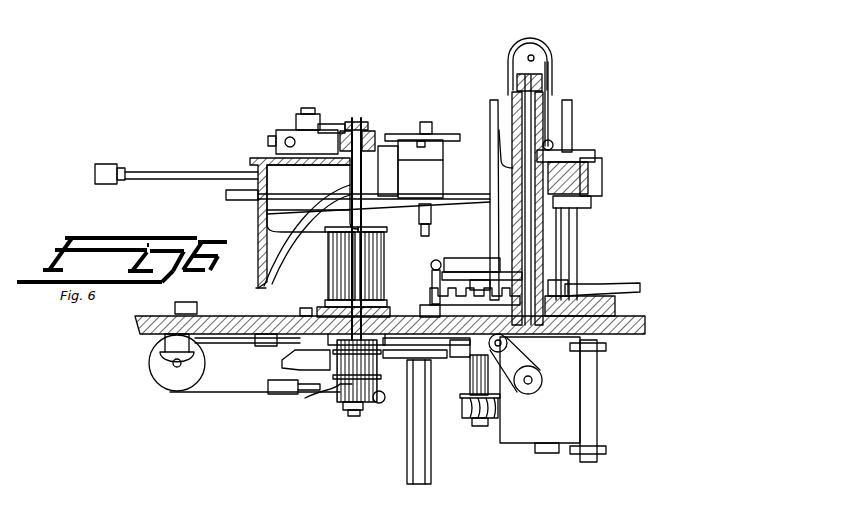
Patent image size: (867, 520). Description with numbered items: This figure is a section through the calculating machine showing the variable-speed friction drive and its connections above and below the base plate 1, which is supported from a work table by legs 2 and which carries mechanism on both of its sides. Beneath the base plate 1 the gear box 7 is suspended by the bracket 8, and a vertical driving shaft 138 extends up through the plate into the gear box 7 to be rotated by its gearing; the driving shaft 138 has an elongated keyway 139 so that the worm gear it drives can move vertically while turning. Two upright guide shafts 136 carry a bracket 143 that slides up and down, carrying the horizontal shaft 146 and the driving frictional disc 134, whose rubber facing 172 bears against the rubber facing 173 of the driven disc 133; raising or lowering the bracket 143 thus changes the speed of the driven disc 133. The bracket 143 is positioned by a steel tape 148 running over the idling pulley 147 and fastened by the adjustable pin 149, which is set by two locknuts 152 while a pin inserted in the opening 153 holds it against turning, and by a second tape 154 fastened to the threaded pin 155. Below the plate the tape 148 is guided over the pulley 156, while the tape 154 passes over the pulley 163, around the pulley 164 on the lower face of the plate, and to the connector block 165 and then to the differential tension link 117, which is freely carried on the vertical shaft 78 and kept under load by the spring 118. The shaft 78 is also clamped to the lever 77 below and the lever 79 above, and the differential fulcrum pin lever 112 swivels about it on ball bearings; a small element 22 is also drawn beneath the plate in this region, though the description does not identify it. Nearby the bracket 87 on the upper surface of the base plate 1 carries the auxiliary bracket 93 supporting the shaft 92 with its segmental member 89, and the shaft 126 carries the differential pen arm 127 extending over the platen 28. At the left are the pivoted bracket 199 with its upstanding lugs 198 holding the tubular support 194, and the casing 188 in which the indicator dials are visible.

The base plate 1 is at (137, 318).
The legs 2 is at (432, 482).
The gear box 7 is at (520, 432).
The bracket 8 is at (598, 410).
The spring 22 is at (470, 420).
The platen 28 is at (620, 286).
The lever 77 is at (284, 394).
The shaft 78 is at (364, 122).
The lever 79 is at (325, 124).
The bracket 87 is at (312, 228).
The segmental member 89 is at (450, 134).
The shaft 92 is at (430, 210).
The auxiliary bracket 93 is at (436, 170).
The differential fulcrum pin lever 112 is at (380, 398).
The differential tension link 117 is at (298, 362).
The spring 118 is at (316, 396).
The shaft 126 is at (436, 260).
The differential pen arm 127 is at (462, 258).
The driven friction member or disc 133 is at (245, 200).
The driving frictional disc or prime mover 134 is at (489, 108).
The upright guide shafts 136 is at (513, 95).
The driving shaft 138 is at (570, 252).
The elongated keyway 139 is at (570, 100).
The bracket 143 is at (594, 165).
The horizontal shaft 146 is at (500, 272).
The idling pulley 147 is at (550, 50).
The steel tape 148 is at (552, 75).
The adjustable pin 149 is at (555, 141).
The locknuts 152 is at (575, 158).
The opening 153 is at (593, 202).
The tape 154 is at (556, 274).
The threaded pin 155 is at (578, 230).
The pulley 156 is at (508, 348).
The pulley 163 is at (540, 392).
The pulley 164 is at (160, 372).
The connector block 165 is at (258, 346).
The rubber facing 172 is at (493, 100).
The rubber facing 173 is at (255, 170).
The casing 188 is at (104, 164).
The tubular support 194 is at (305, 112).
The upstanding lugs 198 is at (278, 134).
The pivoted bracket 199 is at (258, 284).